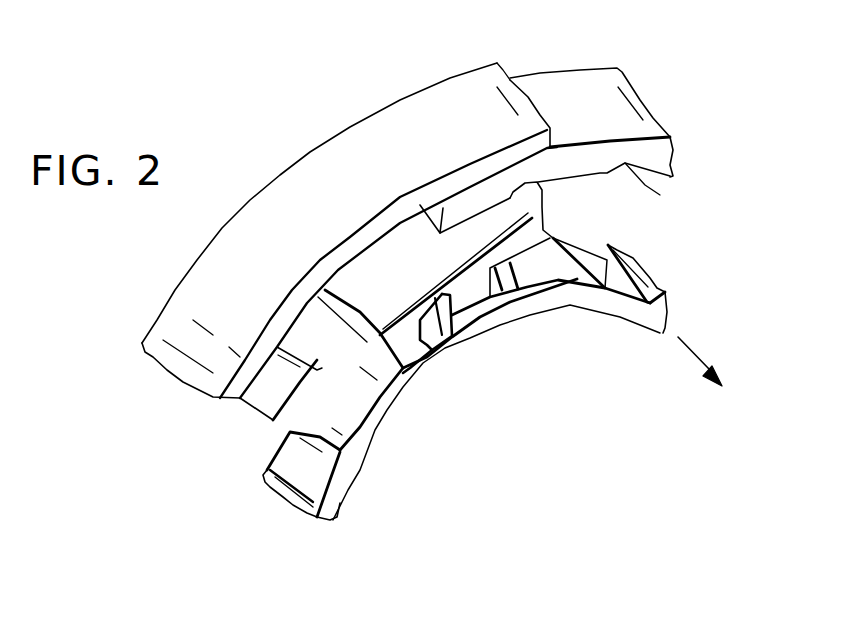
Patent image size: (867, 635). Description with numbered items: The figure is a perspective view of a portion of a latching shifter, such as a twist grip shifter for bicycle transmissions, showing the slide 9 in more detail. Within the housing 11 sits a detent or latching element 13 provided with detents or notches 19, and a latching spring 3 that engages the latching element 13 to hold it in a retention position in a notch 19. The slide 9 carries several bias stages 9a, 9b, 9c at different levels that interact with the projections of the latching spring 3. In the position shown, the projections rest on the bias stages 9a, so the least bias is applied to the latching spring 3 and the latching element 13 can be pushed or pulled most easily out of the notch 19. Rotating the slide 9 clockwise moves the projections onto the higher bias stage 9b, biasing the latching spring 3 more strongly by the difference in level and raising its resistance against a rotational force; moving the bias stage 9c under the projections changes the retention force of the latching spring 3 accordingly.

The latching spring 3 is at (466, 318).
The slide 9 is at (466, 399).
The bias stage 9a is at (535, 354).
The bias stage 9b is at (440, 371).
The bias stage 9c is at (406, 390).
The housing 11 is at (407, 265).
The latching element 13 is at (583, 97).
The notch 19 is at (629, 192).